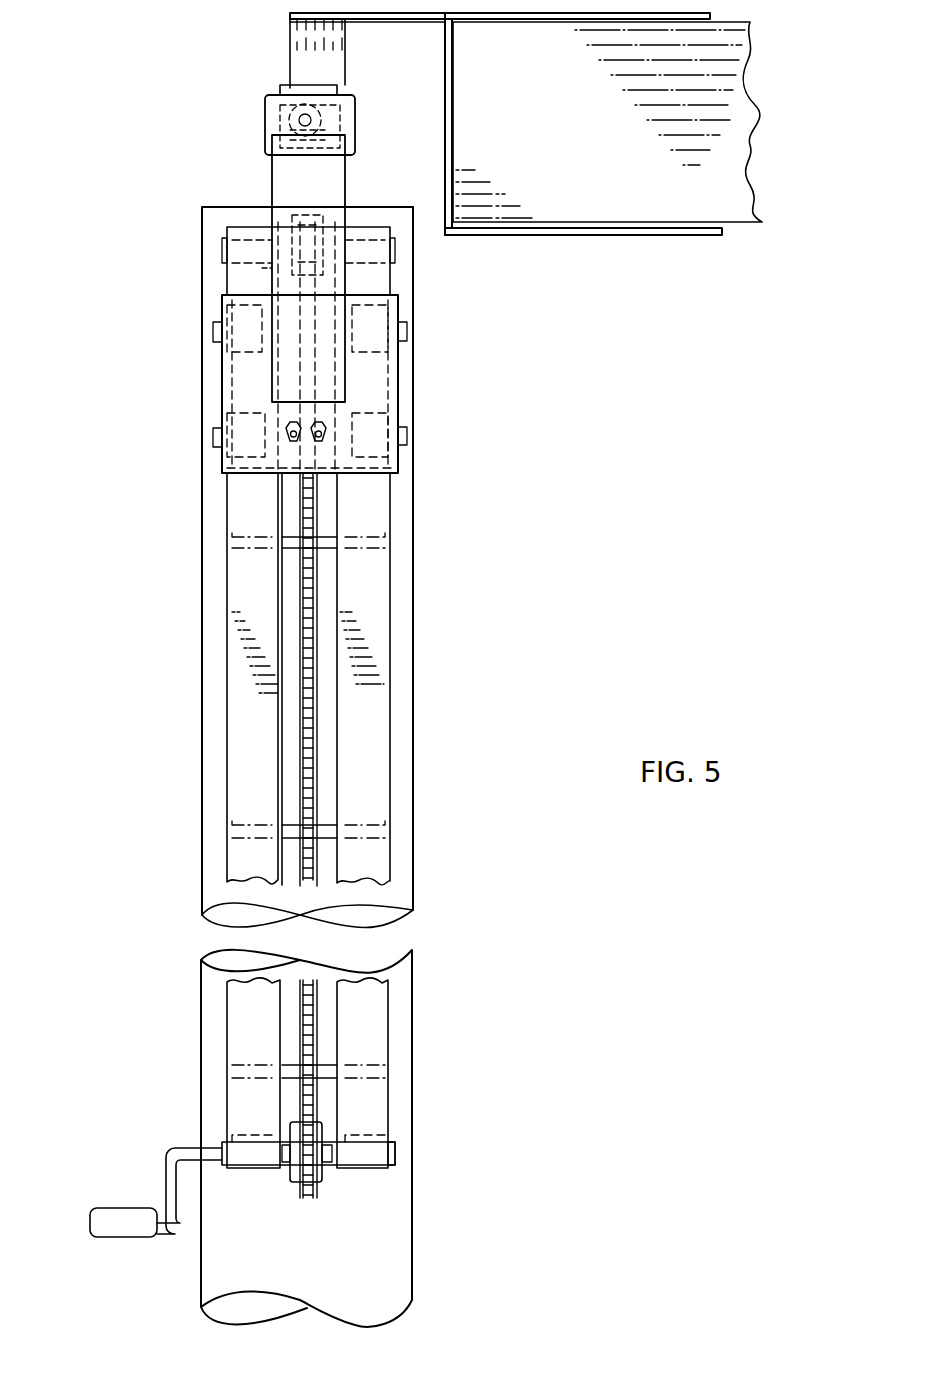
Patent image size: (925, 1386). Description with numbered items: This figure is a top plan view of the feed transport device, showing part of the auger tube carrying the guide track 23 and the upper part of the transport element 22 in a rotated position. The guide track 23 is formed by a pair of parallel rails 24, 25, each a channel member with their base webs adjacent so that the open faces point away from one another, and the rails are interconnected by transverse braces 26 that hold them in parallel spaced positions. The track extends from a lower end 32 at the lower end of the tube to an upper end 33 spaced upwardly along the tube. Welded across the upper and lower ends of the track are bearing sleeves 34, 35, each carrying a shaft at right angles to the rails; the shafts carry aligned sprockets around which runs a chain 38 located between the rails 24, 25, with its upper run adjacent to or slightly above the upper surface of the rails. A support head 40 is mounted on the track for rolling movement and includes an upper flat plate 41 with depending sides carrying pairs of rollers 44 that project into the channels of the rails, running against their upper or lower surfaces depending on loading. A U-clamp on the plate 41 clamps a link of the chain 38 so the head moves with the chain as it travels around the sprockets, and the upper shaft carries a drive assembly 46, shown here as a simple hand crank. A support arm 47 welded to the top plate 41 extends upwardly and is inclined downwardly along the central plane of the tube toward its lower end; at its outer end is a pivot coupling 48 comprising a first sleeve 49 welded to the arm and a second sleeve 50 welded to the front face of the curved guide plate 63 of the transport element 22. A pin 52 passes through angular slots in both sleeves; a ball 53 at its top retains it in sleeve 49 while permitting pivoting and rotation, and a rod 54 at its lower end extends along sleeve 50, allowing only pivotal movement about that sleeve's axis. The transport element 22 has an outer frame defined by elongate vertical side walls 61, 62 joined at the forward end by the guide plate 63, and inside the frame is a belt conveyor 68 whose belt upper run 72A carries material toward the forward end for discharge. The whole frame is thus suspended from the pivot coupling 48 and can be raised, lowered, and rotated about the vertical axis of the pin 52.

The transport element 22 is at (565, 156).
The guide track 23 is at (227, 583).
The rail 24 is at (375, 708).
The rail 25 is at (242, 667).
The transverse brace 26 is at (362, 825).
The lower end 32 is at (228, 222).
The upper end 33 is at (380, 1170).
The bearing sleeve 34 is at (240, 250).
The bearing sleeve 35 is at (372, 1140).
The chain 38 is at (303, 735).
The support head 40 is at (400, 365).
The upper flat plate 41 is at (375, 395).
The roller 44 is at (375, 318).
The drive assembly 46 is at (122, 1195).
The support arm 47 is at (272, 275).
The pivot coupling 48 is at (282, 103).
The first sleeve 49 is at (275, 114).
The second sleeve 50 is at (285, 84).
The pin 52 is at (345, 108).
The ball 53 is at (268, 113).
The rod 54 is at (318, 82).
The side wall 61 is at (548, 25).
The side wall 62 is at (600, 235).
The curved guide plate 63 is at (425, 137).
The belt conveyor 68 is at (755, 108).
The panel section 72A is at (730, 205).